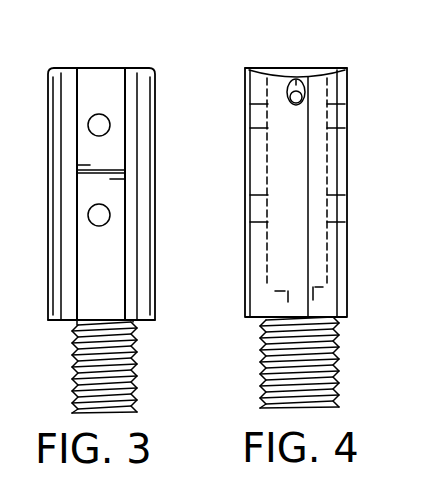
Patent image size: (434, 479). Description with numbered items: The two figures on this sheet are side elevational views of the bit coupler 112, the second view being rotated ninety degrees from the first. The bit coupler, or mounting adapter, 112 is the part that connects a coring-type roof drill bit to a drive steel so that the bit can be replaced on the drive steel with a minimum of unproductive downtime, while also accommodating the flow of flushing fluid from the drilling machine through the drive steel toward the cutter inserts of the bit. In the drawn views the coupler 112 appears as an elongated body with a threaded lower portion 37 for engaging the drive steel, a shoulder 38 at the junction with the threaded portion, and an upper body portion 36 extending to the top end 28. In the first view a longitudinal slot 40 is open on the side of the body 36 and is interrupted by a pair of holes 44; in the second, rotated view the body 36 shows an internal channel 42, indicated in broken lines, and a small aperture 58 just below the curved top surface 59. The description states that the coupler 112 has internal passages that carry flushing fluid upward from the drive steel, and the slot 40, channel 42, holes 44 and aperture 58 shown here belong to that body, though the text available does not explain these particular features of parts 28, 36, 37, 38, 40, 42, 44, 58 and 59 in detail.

In FIG. 3, the bit coupler 112 is at (145, 56).
In FIG. 4, the bit coupler 112 is at (316, 56).
In FIG. 3, the top end of post 28 is at (95, 68).
In FIG. 4, the top end of post 28 is at (269, 65).
In FIG. 3, the post body 36 is at (157, 207).
In FIG. 4, the post body 36 is at (349, 142).
In FIG. 3, the threaded portion 37 is at (72, 367).
In FIG. 4, the threaded portion 37 is at (339, 372).
In FIG. 3, the shoulder 38 is at (145, 322).
In FIG. 3, the slot 40 is at (92, 240).
In FIG. 4, the channel 42 is at (285, 232).
In FIG. 3, the holes 44 is at (110, 123).
In FIG. 4, the aperture 58 is at (302, 98).
In FIG. 4, the curved top surface 59 is at (289, 72).